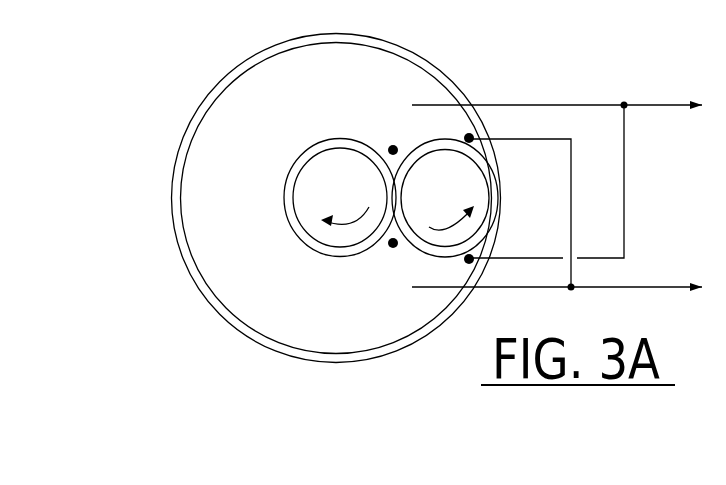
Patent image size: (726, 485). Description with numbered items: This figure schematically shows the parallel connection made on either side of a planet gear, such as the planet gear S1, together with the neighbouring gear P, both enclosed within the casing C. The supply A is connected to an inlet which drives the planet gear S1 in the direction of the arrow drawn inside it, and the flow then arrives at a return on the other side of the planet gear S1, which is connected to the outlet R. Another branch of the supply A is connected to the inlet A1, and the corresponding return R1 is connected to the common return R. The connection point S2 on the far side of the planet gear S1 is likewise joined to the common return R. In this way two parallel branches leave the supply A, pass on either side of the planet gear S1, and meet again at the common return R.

The casing C is at (429, 68).
The pinion gear P is at (340, 198).
The planet gear S1 is at (445, 198).
The return R1 is at (412, 105).
The inlet A1 is at (459, 127).
The second sun gear connection point S2 is at (492, 248).
The outlet R is at (565, 176).
The supply A is at (565, 218).